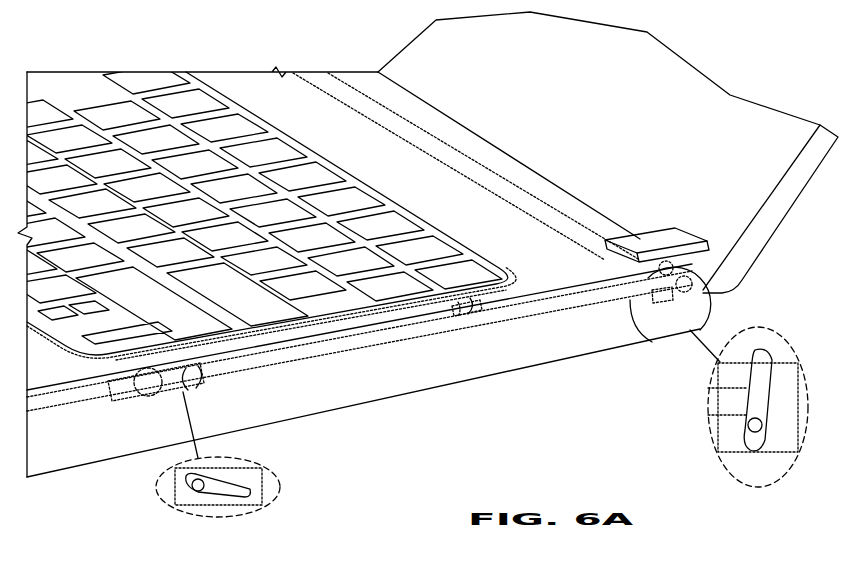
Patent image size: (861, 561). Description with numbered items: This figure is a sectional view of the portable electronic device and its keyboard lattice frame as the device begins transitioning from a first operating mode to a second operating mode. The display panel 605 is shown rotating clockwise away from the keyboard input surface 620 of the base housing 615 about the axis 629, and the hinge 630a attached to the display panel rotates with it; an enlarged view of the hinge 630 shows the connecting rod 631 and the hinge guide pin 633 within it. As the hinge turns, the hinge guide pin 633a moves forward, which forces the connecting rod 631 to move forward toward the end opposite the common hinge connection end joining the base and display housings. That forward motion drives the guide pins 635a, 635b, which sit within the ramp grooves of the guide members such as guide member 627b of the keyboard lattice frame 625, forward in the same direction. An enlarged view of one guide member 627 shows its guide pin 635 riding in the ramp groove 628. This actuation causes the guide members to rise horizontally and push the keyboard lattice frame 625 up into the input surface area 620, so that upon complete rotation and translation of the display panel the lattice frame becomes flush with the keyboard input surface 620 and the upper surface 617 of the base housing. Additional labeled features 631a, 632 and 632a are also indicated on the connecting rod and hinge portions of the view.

The display panel 605 is at (800, 192).
The base housing 615 is at (55, 402).
The upper surface of the base housing 617 is at (362, 168).
The keyboard input surface 620 is at (272, 143).
The keyboard lattice frame 625 is at (497, 284).
The guide member 627 is at (262, 470).
The guide member 627b is at (205, 380).
The ramp groove 628 is at (250, 497).
The axis 629 is at (483, 185).
The hinge 630 is at (782, 365).
The hinge 630a is at (683, 233).
The connecting rod 631 is at (712, 405).
The slot 631a is at (326, 362).
The hinge arm 632 is at (760, 398).
The hinge arm 632a is at (687, 300).
The hinge guide pin 633 is at (762, 427).
The hinge guide pin 633a is at (652, 298).
The guide pin 635 is at (199, 492).
The guide pin 635a is at (155, 390).
The guide pin 635b is at (468, 312).